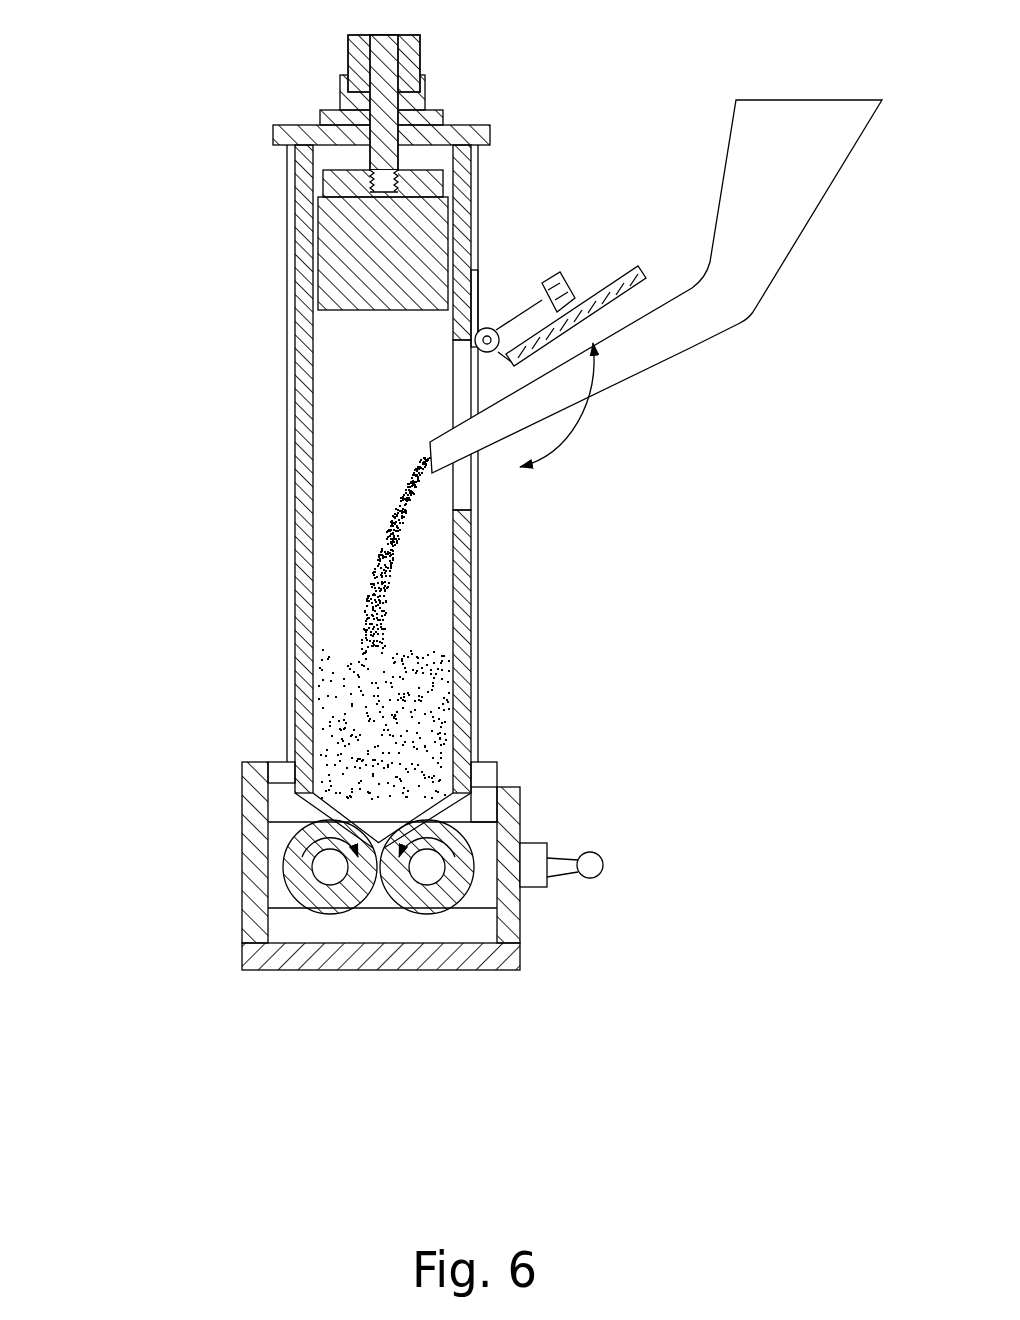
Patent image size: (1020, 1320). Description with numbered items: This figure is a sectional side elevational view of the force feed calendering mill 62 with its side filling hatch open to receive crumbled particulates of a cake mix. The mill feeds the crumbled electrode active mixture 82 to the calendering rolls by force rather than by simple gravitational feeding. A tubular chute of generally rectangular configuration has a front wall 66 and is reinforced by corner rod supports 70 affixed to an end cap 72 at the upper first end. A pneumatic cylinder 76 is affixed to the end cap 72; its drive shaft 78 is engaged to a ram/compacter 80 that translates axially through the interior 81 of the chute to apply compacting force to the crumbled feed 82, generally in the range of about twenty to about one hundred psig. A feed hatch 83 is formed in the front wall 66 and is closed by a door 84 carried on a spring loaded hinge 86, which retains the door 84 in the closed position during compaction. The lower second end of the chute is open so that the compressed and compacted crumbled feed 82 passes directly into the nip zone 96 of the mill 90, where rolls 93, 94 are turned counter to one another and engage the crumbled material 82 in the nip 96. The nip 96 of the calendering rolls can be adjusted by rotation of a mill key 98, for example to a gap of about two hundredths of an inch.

The force feed calendering mill 62 is at (213, 158).
The front wall 66 is at (300, 255).
The corner rod support 70 is at (287, 650).
The end cap 72 is at (300, 127).
The pneumatic cylinder 76 is at (402, 66).
The drive shaft 78 is at (385, 121).
The ram/compacter 80 is at (417, 245).
The interior 81 is at (425, 558).
The crumbled electrode active mixture 82 is at (405, 688).
The feed hatch 83 is at (463, 512).
The door 84 is at (546, 284).
The spring loaded hinge 86 is at (490, 328).
The mill 90 is at (517, 937).
The roll 93 is at (470, 812).
The roll 94 is at (297, 870).
The nip zone 96 is at (470, 812).
The mill key 98 is at (538, 855).